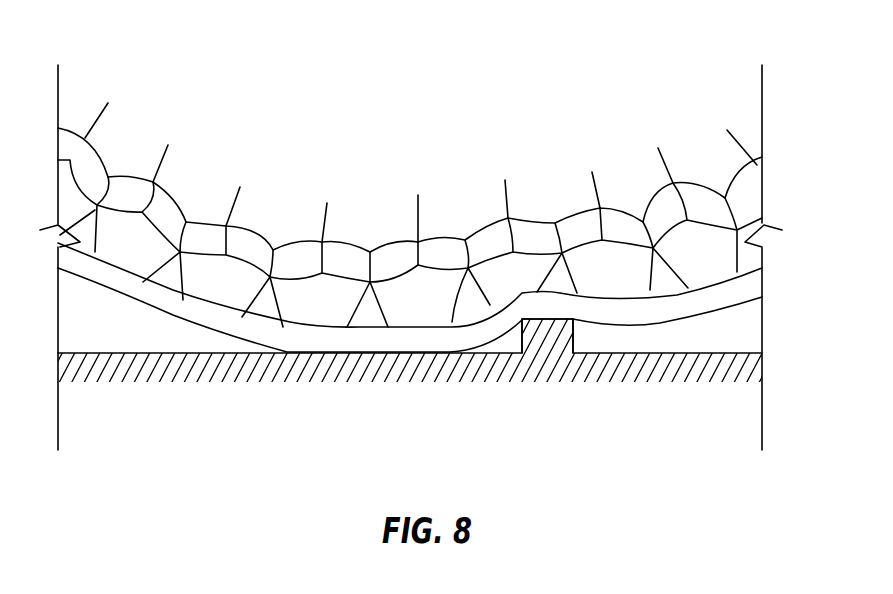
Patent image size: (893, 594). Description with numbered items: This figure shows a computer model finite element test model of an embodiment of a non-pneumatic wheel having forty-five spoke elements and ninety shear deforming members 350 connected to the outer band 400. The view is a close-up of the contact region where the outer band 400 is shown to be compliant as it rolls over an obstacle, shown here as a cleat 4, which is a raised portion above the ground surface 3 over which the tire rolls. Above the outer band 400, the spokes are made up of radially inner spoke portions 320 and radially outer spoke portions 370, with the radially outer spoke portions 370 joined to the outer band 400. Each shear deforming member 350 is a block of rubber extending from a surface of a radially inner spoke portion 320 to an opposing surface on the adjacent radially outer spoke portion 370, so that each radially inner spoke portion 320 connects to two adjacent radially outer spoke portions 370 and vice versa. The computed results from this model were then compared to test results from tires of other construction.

The ground surface 3 is at (242, 378).
The cleat 4 is at (562, 338).
The outer band 400 is at (302, 342).
The shear deforming member 350 is at (397, 253).
The radially inner spoke portion 320 is at (507, 203).
The radially outer spoke portion 370 is at (560, 272).